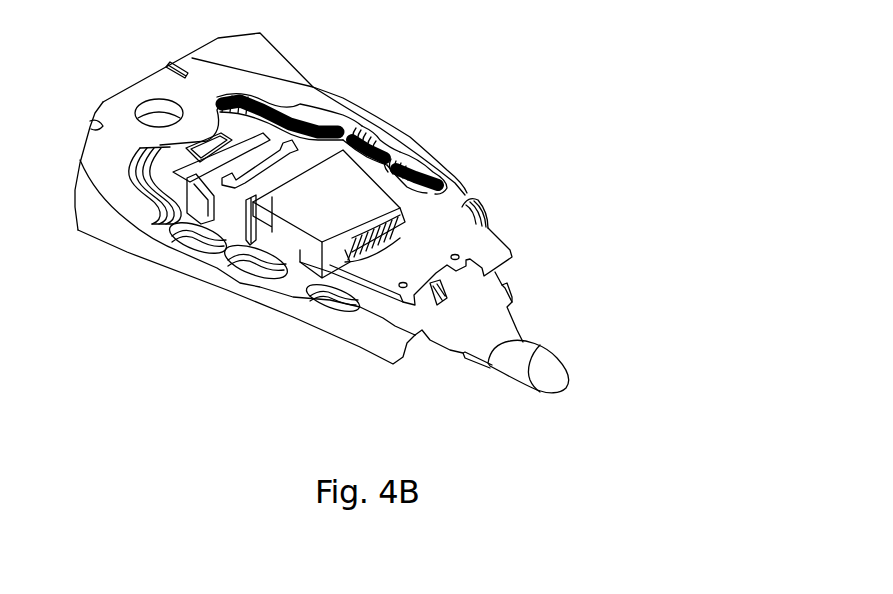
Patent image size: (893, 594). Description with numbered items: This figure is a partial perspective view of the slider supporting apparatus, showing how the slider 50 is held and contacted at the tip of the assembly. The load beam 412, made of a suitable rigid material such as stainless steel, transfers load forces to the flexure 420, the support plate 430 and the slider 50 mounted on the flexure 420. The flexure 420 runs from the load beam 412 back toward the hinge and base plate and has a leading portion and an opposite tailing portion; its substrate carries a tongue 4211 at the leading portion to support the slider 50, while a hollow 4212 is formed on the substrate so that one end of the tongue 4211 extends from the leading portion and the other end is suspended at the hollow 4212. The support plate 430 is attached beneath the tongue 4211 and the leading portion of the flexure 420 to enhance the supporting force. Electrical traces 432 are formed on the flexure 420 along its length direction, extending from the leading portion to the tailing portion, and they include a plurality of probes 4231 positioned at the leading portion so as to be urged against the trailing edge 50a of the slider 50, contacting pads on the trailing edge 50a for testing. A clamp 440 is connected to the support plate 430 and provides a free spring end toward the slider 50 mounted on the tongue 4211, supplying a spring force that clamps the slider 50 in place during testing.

The tongue 4211 is at (325, 125).
The electrical traces 432 is at (360, 130).
The slider 50 is at (335, 200).
The trailing edge 50a is at (400, 210).
The flexure 420 is at (453, 237).
The load beam 412 is at (502, 328).
The clamp 440 is at (200, 173).
The hollow 4212 is at (203, 212).
The support plate 430 is at (252, 238).
The probes 4231 is at (388, 256).